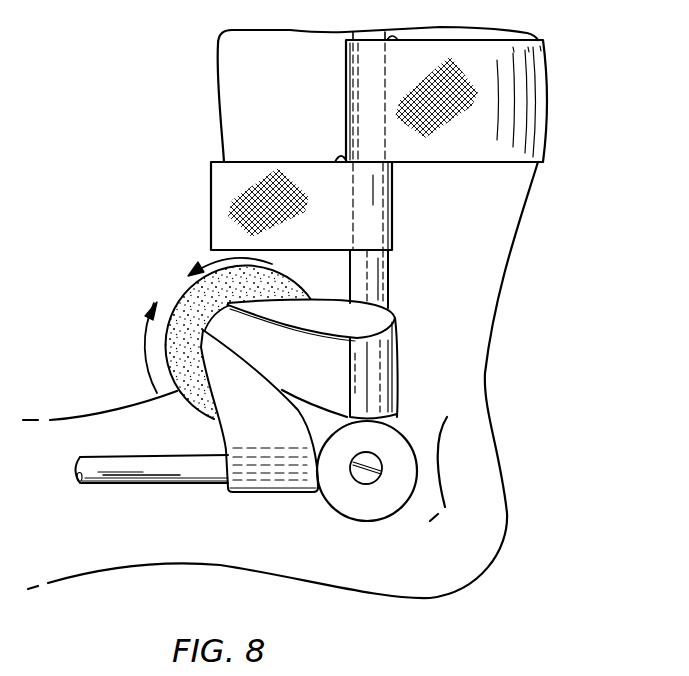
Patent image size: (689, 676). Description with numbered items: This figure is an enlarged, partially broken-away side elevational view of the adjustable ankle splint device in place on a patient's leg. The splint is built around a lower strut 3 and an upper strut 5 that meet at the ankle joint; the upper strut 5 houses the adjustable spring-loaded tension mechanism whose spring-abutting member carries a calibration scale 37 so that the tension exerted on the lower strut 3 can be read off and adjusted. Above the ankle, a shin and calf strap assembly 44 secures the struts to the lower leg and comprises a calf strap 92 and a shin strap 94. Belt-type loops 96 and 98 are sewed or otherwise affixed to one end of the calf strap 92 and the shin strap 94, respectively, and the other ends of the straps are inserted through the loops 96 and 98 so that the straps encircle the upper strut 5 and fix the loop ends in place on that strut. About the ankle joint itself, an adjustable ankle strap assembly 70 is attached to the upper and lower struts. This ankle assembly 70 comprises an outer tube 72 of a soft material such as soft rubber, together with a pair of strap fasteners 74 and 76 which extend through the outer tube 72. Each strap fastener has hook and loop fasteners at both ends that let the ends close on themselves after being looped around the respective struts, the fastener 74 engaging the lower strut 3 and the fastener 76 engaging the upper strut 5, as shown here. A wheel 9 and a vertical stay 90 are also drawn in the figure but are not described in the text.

The lower strut 3 is at (188, 466).
The upper strut 5 is at (380, 283).
The wheel 9 is at (384, 506).
The calibration scale 37 is at (147, 473).
The shin and calf strap assembly 44 is at (550, 172).
The adjustable ankle strap assembly 70 is at (198, 306).
The outer tube 72 is at (190, 403).
The strap fastener 74 is at (260, 472).
The strap fastener 76 is at (382, 360).
The vertical stay 90 is at (372, 189).
The calf strap 92 is at (546, 98).
The shin strap 94 is at (270, 175).
The belt-type loop 96 is at (380, 73).
The belt-type loop 98 is at (340, 155).